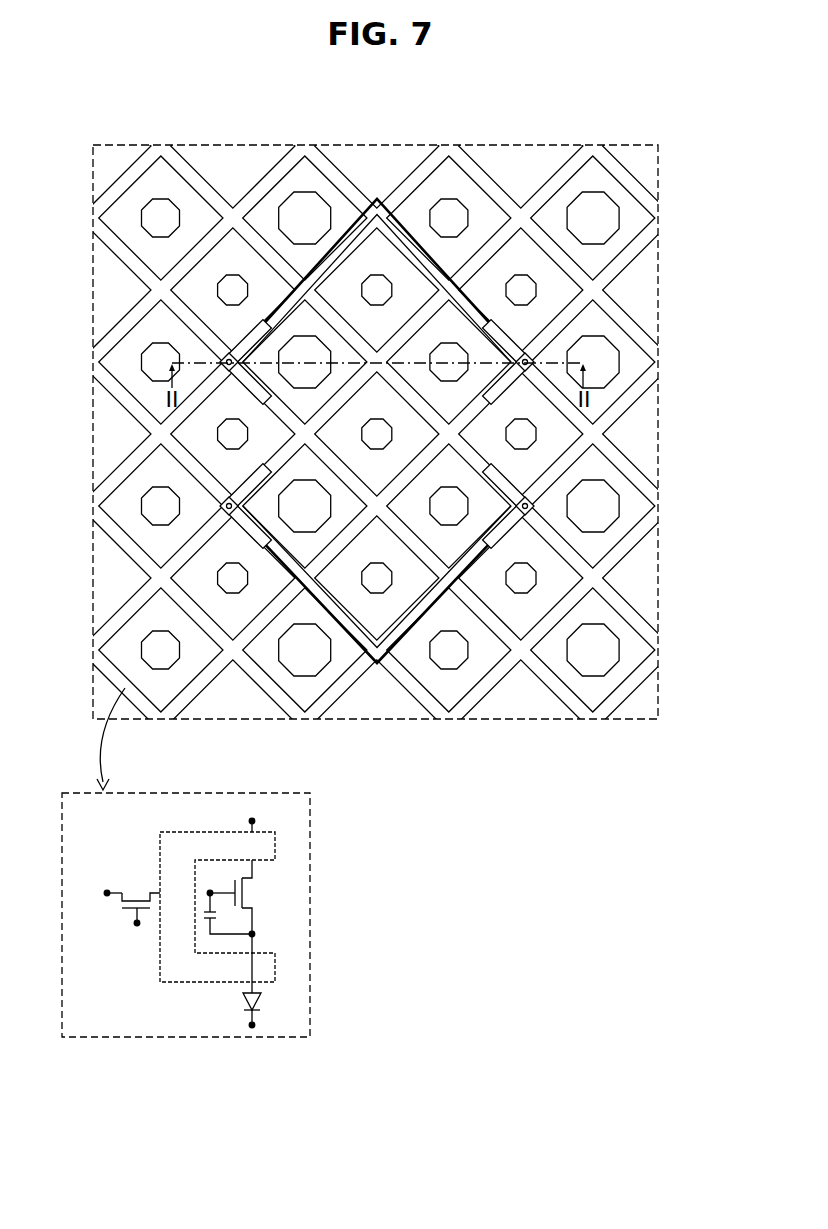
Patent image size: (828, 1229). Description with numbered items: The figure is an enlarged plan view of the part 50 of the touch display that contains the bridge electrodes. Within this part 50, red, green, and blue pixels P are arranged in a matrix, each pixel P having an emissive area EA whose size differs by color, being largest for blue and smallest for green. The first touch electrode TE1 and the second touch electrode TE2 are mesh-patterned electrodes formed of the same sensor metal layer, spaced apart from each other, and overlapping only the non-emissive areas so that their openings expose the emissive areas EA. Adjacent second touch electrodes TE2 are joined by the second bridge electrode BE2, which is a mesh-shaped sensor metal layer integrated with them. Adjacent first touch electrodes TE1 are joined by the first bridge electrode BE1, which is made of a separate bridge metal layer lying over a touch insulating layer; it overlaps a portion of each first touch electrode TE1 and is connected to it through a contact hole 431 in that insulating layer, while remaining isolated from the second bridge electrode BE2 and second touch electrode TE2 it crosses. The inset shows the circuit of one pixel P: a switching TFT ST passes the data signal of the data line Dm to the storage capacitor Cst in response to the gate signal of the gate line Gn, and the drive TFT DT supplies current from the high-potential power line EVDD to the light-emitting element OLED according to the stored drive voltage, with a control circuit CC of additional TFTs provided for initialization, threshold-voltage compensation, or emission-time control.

The part including bridge electrodes 50 is at (660, 187).
The contact hole 431 is at (222, 360).
The first bridge electrode BE1 is at (377, 197).
The second bridge electrode BE2 is at (413, 396).
The first touch electrode TE1 is at (116, 531).
The second touch electrode TE2 is at (565, 174).
The emissive area EA is at (140, 650).
The pixel P is at (126, 592).
The control circuit CC is at (160, 976).
The switching TFT ST is at (141, 898).
The drive TFT DT is at (240, 897).
The storage capacitor Cst is at (229, 915).
The light-emitting element OLED is at (276, 981).
The high-potential power line EVDD is at (254, 815).
The data line Dm is at (98, 894).
The gate line Gn is at (137, 937).